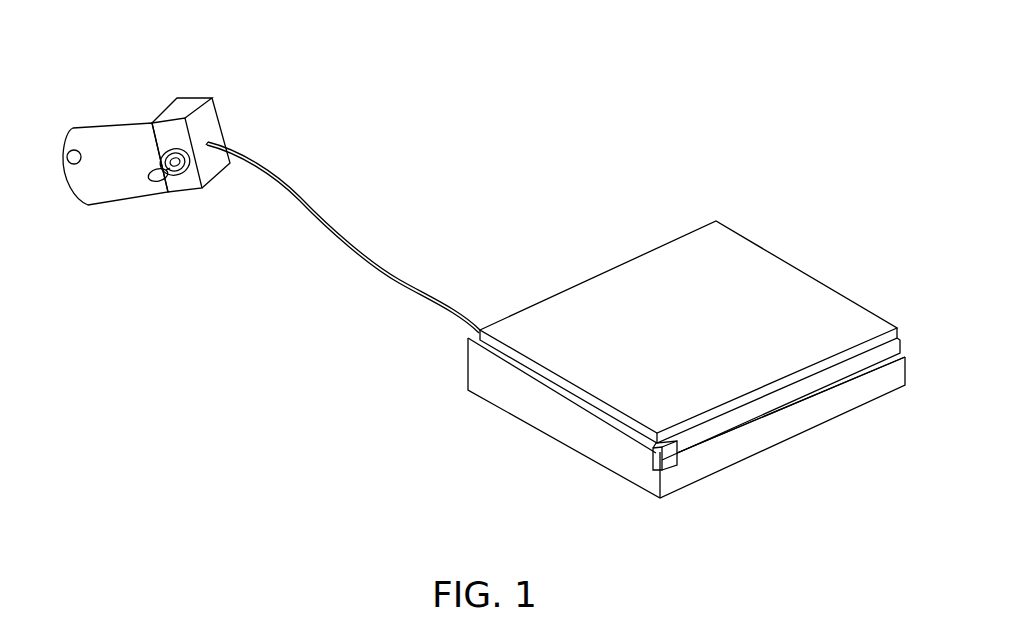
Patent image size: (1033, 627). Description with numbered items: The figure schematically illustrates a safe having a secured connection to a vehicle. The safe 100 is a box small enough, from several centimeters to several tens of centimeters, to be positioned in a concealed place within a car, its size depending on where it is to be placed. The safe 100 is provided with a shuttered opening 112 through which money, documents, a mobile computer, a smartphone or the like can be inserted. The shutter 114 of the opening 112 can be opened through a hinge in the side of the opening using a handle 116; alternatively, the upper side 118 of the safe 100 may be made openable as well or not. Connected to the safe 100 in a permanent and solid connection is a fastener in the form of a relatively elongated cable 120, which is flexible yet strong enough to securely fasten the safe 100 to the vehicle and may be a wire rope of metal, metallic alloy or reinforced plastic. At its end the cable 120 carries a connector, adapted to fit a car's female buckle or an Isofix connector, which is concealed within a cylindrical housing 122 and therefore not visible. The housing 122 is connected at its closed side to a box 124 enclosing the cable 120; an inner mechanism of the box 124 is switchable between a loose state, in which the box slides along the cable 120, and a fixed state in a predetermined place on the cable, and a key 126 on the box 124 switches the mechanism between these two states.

The safe 100 is at (380, 456).
The shuttered opening 112 is at (858, 363).
The shutter 114 is at (690, 442).
The handle 116 is at (677, 470).
The upper side 118 is at (632, 275).
The cable 120 is at (343, 235).
The housing 122 is at (117, 143).
The box 124 is at (187, 107).
The key 126 is at (173, 182).